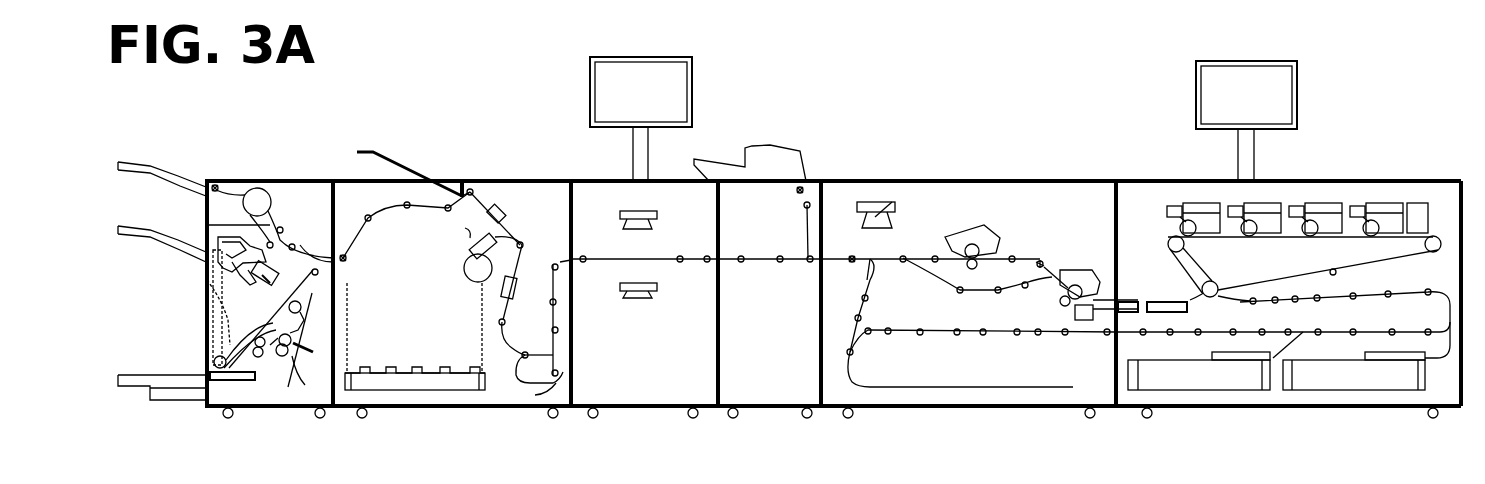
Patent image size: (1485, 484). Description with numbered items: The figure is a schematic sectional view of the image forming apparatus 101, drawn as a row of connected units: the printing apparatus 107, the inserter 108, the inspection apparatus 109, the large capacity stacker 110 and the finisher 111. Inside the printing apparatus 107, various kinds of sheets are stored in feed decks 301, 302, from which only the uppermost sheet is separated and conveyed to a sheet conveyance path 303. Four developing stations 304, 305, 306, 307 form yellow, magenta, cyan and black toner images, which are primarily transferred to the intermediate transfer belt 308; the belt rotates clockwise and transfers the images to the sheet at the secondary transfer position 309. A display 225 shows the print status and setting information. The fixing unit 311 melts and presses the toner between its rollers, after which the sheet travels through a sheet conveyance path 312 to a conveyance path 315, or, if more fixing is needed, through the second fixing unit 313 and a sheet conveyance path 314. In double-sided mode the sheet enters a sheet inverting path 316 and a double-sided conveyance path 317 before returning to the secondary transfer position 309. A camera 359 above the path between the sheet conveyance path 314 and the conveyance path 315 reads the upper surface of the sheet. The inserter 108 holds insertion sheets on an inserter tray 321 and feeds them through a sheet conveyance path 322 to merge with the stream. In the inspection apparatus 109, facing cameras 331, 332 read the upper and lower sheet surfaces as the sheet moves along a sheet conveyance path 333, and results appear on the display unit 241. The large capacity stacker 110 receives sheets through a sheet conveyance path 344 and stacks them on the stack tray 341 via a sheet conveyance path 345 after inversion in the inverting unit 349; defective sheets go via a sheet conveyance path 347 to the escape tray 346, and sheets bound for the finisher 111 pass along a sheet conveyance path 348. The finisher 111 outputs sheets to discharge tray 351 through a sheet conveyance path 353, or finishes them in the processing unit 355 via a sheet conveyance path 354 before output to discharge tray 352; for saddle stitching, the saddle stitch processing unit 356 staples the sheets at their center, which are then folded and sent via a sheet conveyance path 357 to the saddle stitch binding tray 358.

The image forming apparatus 101 is at (1015, 110).
The printing apparatus 107 is at (955, 425).
The inserter 108 is at (778, 425).
The inspection apparatus 109 is at (648, 425).
The large capacity stacker 110 is at (520, 425).
The finisher 111 is at (302, 425).
The display 225 is at (1194, 78).
The display unit 241 is at (588, 76).
The feed deck 301 is at (1228, 392).
The feed deck 302 is at (1375, 392).
The sheet conveyance path 303 is at (1455, 296).
The developing station 304 is at (1386, 203).
The developing station 305 is at (1326, 203).
The developing station 306 is at (1266, 203).
The developing station 307 is at (1205, 203).
The intermediate transfer belt 308 is at (1270, 283).
The secondary transfer position 309 is at (1200, 288).
The fixing unit 311 is at (1078, 268).
The sheet conveyance path 312 is at (930, 276).
The second fixing unit 313 is at (970, 228).
The sheet conveyance path 314 is at (935, 265).
The conveyance path 315 is at (833, 259).
The sheet inverting path 316 is at (912, 387).
The double-sided conveyance path 317 is at (1080, 340).
The inserter tray 321 is at (694, 162).
The sheet conveyance path 322 is at (808, 232).
The camera 331 is at (660, 216).
The camera 332 is at (645, 299).
The sheet conveyance path 333 is at (622, 256).
The stack tray 341 is at (378, 365).
The sheet conveyance path 344 is at (533, 324).
The sheet conveyance path 345 is at (494, 236).
The escape tray 346 is at (420, 178).
The sheet conveyance path 347 is at (488, 203).
The sheet conveyance path 348 is at (376, 210).
The inverting unit 349 is at (535, 327).
The discharge tray 351 is at (124, 160).
The discharge tray 352 is at (124, 225).
The sheet conveyance path 353 is at (240, 188).
The sheet conveyance path 354 is at (207, 224).
The processing unit 355 is at (249, 286).
The saddle stitch processing unit 356 is at (298, 370).
The sheet conveyance path 357 is at (231, 375).
The saddle stitch binding tray 358 is at (125, 375).
The camera 359 is at (897, 200).